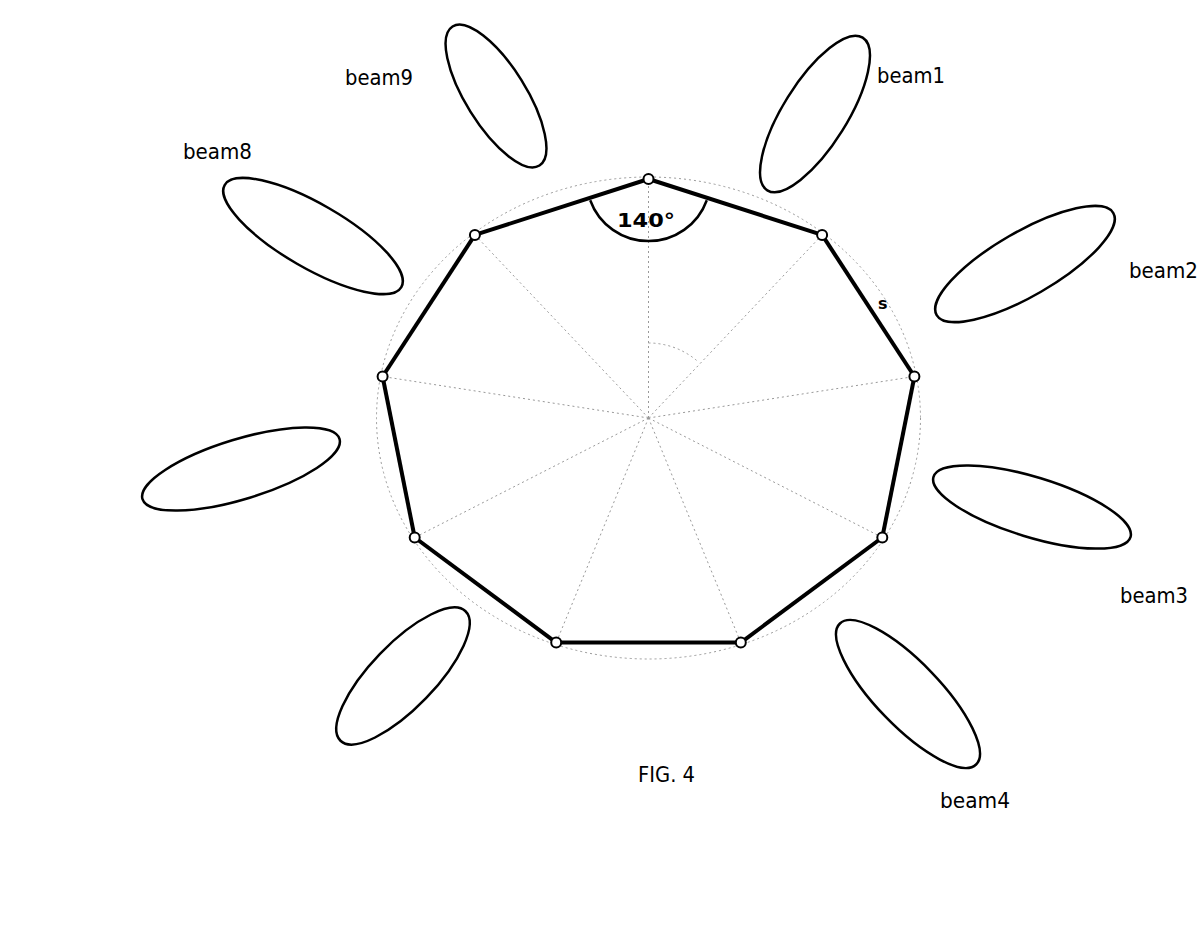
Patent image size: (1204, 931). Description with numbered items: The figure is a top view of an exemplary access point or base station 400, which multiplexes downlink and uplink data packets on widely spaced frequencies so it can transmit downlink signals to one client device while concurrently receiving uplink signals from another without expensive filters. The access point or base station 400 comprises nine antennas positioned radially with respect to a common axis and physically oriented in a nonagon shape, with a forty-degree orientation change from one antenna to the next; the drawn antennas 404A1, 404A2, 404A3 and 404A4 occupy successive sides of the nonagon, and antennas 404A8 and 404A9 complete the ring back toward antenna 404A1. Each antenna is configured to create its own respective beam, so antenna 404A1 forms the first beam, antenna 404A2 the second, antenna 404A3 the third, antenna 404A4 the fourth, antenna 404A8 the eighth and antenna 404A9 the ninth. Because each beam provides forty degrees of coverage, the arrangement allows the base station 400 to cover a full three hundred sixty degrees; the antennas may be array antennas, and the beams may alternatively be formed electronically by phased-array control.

The access point or base station 400 is at (1075, 102).
The antenna 404A1 is at (713, 193).
The antenna 404A2 is at (860, 285).
The antenna 404A3 is at (924, 458).
The antenna 404A4 is at (818, 584).
The antenna 404A8 is at (404, 323).
The antenna 404A9 is at (537, 209).